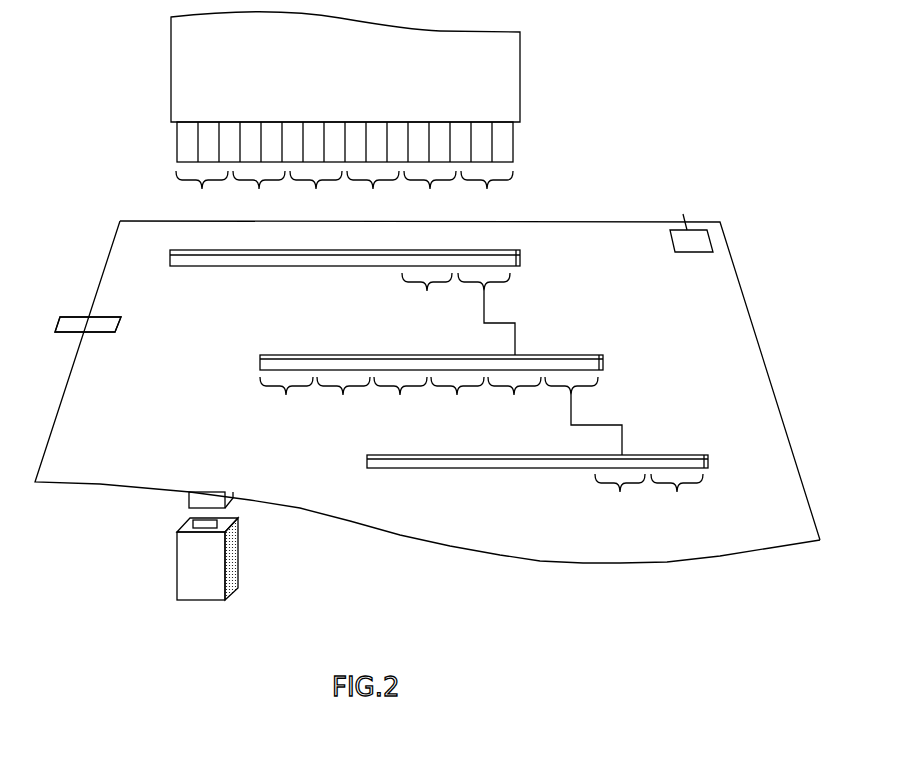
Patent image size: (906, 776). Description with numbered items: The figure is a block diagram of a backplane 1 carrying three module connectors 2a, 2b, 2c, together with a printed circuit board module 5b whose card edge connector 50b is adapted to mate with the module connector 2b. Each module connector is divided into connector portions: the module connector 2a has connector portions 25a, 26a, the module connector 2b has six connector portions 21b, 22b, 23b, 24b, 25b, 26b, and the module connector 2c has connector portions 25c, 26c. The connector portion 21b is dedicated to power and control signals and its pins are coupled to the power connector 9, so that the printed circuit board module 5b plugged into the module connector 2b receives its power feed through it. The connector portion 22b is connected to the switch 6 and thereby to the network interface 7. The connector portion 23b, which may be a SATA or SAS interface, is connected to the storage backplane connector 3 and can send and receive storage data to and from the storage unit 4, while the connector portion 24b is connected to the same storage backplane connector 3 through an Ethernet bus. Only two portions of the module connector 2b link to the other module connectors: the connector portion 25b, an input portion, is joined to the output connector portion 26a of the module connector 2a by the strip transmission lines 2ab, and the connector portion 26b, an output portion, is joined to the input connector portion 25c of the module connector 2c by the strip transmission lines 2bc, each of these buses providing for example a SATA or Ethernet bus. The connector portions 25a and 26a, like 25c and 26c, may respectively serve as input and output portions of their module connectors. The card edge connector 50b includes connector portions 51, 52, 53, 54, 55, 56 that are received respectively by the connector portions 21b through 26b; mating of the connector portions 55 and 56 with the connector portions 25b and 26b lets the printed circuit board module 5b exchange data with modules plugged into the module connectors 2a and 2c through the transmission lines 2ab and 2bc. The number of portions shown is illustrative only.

The backplane 1 is at (770, 373).
The module connector 2a is at (522, 256).
The module connector 2b is at (604, 361).
The module connector 2c is at (709, 461).
The strip transmission lines 2ab is at (516, 325).
The strip transmission lines 2bc is at (619, 426).
The storage backplane connector 3 is at (187, 498).
The storage unit 4 is at (193, 580).
The printed circuit board module 5b is at (316, 90).
The switch 6 is at (105, 315).
The network interface 7 is at (73, 315).
The power connector 9 is at (691, 233).
The connector portion 21b is at (286, 400).
The connector portion 22b is at (343, 400).
The connector portion 23b is at (400, 400).
The connector portion 24b is at (457, 400).
The connector portion 25a is at (427, 295).
The connector portion 25b is at (514, 400).
The connector portion 25c is at (620, 498).
The connector portion 26a is at (484, 295).
The connector portion 26b is at (571, 400).
The connector portion 26c is at (677, 498).
The card edge connector 50b is at (516, 141).
The connector portion 51 is at (202, 194).
The connector portion 52 is at (259, 194).
The connector portion 53 is at (316, 194).
The connector portion 54 is at (373, 194).
The connector portion 55 is at (430, 194).
The connector portion 56 is at (487, 194).